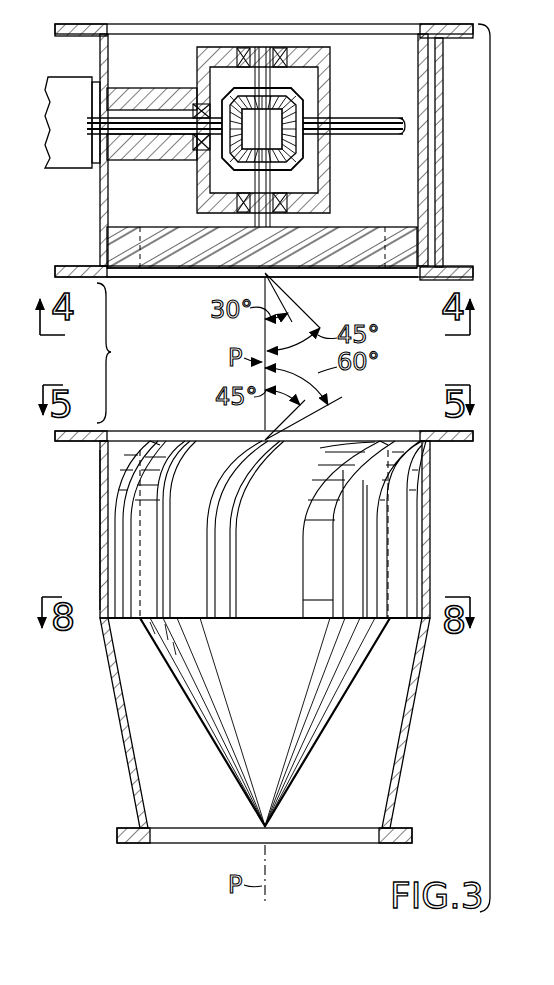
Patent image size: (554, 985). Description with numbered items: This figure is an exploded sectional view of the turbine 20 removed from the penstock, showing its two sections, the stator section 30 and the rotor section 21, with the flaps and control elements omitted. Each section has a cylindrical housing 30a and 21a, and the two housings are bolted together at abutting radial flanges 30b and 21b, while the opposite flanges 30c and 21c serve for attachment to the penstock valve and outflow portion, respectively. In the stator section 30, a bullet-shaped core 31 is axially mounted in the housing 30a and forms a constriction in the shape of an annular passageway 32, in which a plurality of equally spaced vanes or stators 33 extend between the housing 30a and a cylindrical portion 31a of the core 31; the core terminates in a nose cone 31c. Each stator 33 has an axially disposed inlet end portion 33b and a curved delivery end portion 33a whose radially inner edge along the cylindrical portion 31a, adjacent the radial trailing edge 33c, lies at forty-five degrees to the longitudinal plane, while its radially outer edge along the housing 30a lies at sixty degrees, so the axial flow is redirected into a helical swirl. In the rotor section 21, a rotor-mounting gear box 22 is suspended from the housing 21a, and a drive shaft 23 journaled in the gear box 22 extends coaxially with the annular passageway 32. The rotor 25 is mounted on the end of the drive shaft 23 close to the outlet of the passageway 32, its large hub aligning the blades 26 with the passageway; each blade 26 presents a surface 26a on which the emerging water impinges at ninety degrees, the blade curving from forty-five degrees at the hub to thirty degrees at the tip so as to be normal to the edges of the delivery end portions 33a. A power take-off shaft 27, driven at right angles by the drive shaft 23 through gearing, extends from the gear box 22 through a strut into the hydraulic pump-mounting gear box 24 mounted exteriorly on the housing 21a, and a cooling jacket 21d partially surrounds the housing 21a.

The turbine 20 is at (494, 455).
The rotor section 21 is at (98, 209).
The cylindrical housing 21a is at (108, 55).
The radial flange 21b is at (85, 265).
The flange 21c is at (88, 0).
The jacket 21d is at (432, 101).
The rotor-mounting gear box 22 is at (330, 78).
The drive shaft 23 is at (277, 221).
The hydraulic pump-mounting gear box 24 is at (72, 80).
The rotor 25 is at (322, 277).
The blades 26 is at (187, 228).
The blade surface 26a is at (190, 264).
The power take-off shaft 27 is at (141, 150).
The stator section 30 is at (432, 580).
The cylindrical housing 30a is at (101, 561).
The radial flange 30b is at (72, 442).
The flange 30c is at (128, 845).
The bullet-shaped core 31 is at (332, 716).
The cylindrical portion 31a is at (188, 606).
The nose cone 31c is at (270, 815).
The annular passageway 32 is at (416, 508).
The vanes or stators 33 is at (124, 519).
The curved delivery end portion 33a is at (330, 480).
The inlet end portion 33b is at (312, 593).
The radial trailing edge 33c is at (150, 445).